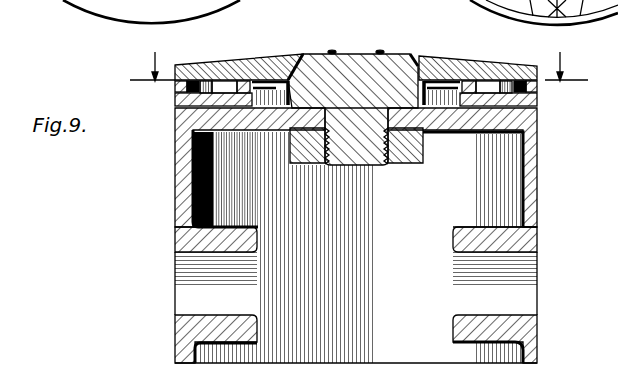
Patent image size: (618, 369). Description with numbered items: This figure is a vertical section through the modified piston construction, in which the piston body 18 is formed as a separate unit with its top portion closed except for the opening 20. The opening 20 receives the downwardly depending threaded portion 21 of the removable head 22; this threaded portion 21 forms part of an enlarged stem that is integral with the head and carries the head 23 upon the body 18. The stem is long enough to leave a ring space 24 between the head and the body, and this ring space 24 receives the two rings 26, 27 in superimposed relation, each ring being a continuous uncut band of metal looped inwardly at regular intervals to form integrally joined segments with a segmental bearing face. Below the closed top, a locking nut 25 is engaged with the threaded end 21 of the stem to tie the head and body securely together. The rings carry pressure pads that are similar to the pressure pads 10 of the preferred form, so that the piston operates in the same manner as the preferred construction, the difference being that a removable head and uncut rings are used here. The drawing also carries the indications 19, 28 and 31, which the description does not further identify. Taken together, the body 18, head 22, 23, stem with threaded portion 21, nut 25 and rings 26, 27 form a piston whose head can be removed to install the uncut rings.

The pressure pads 10 is at (358, 66).
The piston body 18 is at (175, 193).
The web 19 is at (453, 230).
The opening 20 is at (432, 135).
The threaded portion 21 is at (367, 167).
The removable head 22 is at (240, 63).
The head 23 is at (377, 72).
The ring space 24 is at (430, 84).
The locking nut 25 is at (317, 163).
The ring 26 is at (175, 88).
The ring 27 is at (175, 105).
The locking marks 28 is at (414, 60).
The seal ring 31 is at (503, 85).